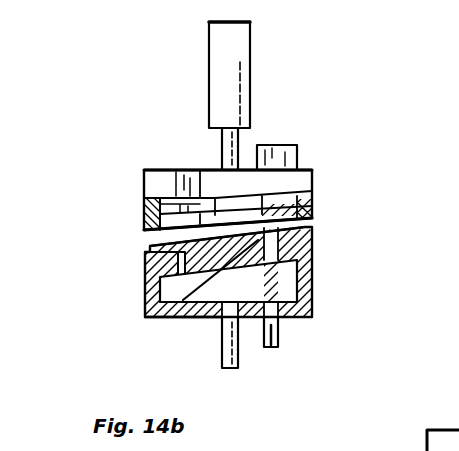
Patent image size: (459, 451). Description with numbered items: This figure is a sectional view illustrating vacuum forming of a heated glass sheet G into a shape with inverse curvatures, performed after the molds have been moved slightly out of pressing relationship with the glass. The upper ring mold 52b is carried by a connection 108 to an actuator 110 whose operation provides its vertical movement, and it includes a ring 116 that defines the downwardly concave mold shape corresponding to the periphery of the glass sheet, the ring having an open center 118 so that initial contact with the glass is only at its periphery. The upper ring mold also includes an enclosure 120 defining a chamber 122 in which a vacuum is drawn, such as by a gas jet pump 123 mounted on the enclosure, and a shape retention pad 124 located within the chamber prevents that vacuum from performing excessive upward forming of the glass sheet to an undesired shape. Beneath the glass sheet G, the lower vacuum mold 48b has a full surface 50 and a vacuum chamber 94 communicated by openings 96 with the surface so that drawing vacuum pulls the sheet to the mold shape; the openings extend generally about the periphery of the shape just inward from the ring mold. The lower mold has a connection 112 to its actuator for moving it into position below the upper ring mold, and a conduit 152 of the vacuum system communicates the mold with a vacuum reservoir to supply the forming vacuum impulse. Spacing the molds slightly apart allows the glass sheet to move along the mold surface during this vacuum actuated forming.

The actuator 110 is at (245, 50).
The connection 108 is at (221, 148).
The gas jet pump 123 is at (297, 152).
The upper ring mold 52b is at (319, 173).
The shape retention pad 124 is at (242, 186).
The ring 116 is at (312, 206).
The open center 118 is at (201, 172).
The enclosure 120 is at (158, 180).
The chamber 122 is at (164, 203).
The glass sheet G is at (150, 244).
The vacuum chamber 94 is at (292, 282).
The openings 96 is at (295, 250).
The lower vacuum mold 48b is at (143, 283).
The full surface 50 is at (173, 318).
The connection 112 is at (238, 353).
The conduit 152 is at (278, 330).